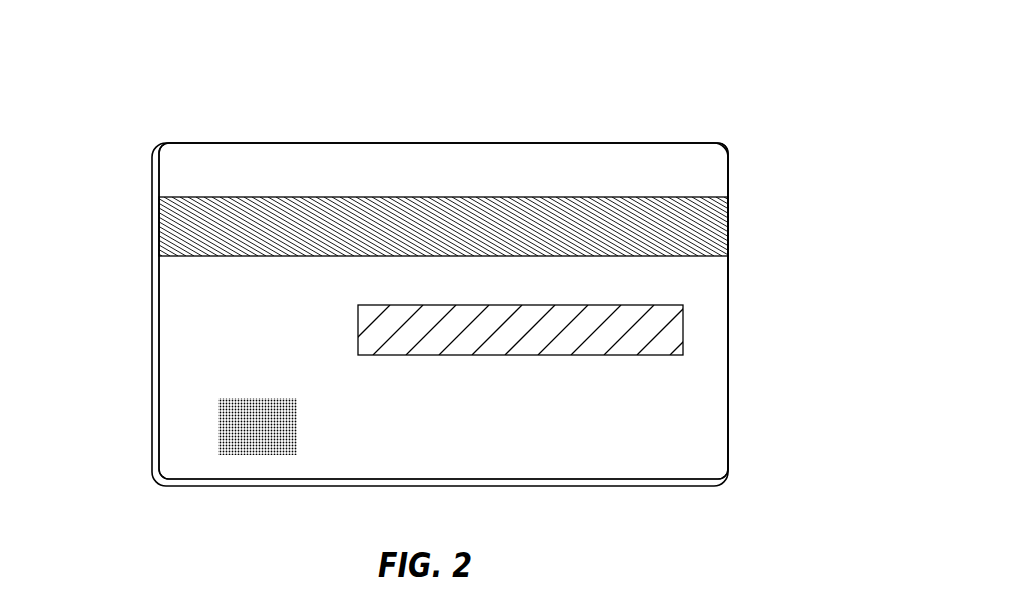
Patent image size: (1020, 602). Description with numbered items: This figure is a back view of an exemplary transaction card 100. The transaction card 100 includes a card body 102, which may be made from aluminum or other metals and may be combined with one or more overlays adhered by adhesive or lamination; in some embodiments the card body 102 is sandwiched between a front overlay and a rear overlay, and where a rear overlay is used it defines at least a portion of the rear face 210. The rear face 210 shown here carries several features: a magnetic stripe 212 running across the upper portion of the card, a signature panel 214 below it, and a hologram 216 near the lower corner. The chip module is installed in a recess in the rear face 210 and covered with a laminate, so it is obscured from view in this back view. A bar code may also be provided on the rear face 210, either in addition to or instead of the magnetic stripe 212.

The transaction card 100 is at (441, 106).
The card body 102 is at (742, 320).
The rear face 210 is at (675, 157).
The magnetic stripe 212 is at (177, 223).
The signature panel 214 is at (632, 345).
The hologram 216 is at (238, 428).